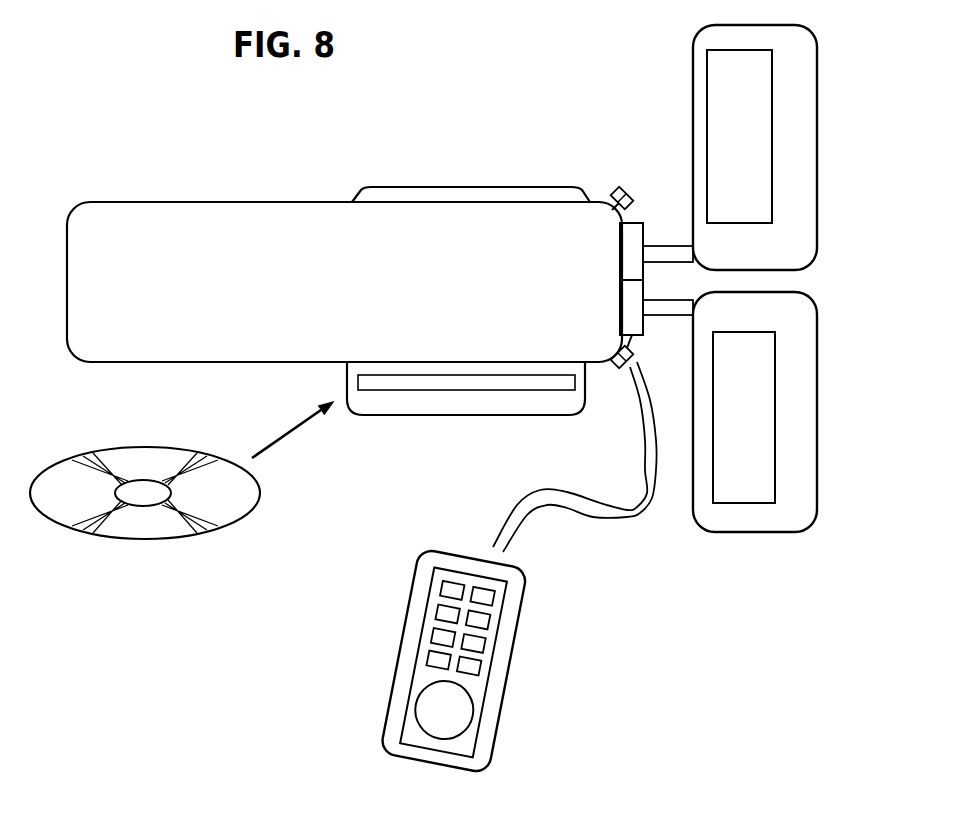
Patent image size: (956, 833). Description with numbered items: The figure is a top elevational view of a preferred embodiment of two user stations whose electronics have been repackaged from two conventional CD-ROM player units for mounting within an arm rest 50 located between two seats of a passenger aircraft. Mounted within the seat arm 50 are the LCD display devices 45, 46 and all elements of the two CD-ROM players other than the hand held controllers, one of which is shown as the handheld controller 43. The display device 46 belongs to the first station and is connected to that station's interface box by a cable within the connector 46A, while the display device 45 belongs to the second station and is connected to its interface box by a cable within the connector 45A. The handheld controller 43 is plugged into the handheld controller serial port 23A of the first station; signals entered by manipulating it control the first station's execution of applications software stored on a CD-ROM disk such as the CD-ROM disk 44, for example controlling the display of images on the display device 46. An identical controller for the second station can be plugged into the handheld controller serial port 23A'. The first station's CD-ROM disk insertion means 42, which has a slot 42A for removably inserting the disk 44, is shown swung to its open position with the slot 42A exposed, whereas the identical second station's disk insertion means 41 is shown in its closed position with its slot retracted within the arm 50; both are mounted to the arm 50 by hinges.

The arm rest 50 is at (146, 202).
The CD-ROM disk insertion means 41 is at (373, 188).
The CD-ROM disk insertion means 42 is at (573, 412).
The slot 42A is at (358, 385).
The handheld controller 43 is at (507, 638).
The CD-ROM disk 44 is at (115, 540).
The LCD display device 45 is at (817, 108).
The connector 45A is at (675, 247).
The LCD display device 46 is at (817, 385).
The connector 46A is at (672, 317).
The handheld controller serial port 23A is at (657, 467).
The handheld controller serial port 23A' is at (639, 175).